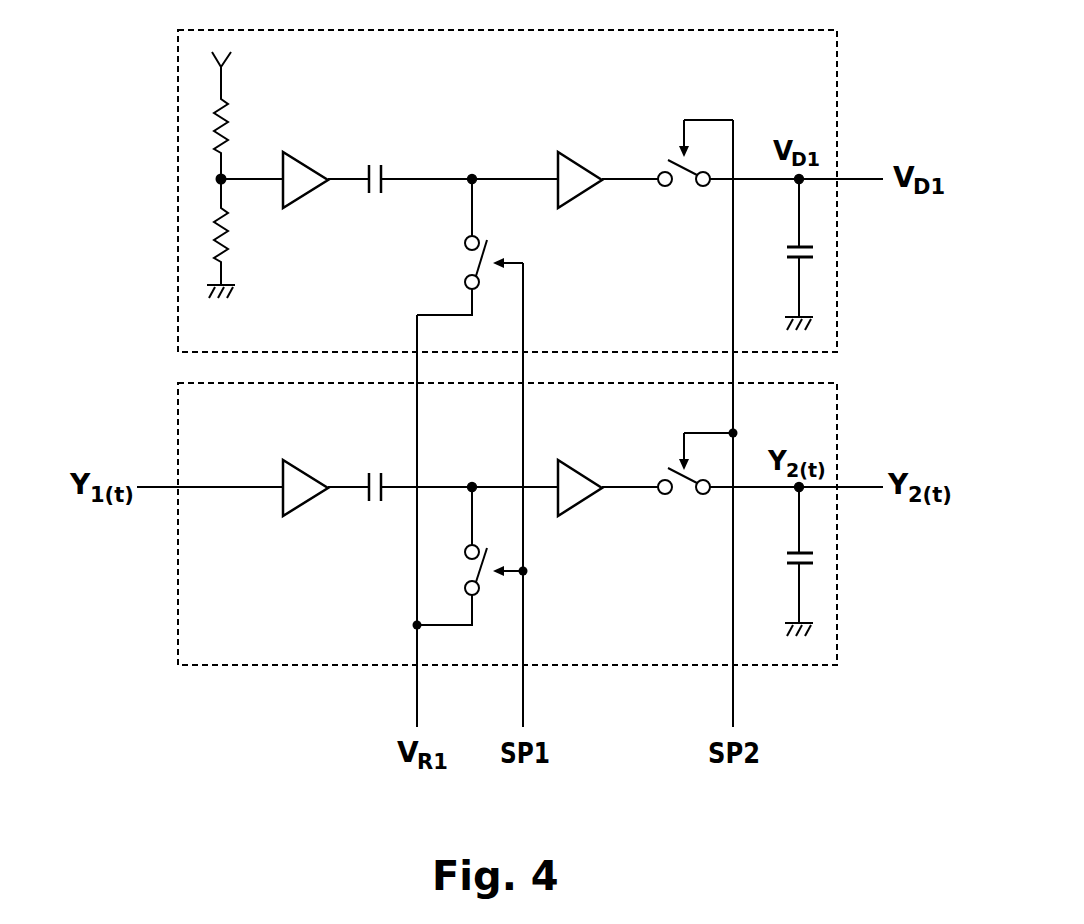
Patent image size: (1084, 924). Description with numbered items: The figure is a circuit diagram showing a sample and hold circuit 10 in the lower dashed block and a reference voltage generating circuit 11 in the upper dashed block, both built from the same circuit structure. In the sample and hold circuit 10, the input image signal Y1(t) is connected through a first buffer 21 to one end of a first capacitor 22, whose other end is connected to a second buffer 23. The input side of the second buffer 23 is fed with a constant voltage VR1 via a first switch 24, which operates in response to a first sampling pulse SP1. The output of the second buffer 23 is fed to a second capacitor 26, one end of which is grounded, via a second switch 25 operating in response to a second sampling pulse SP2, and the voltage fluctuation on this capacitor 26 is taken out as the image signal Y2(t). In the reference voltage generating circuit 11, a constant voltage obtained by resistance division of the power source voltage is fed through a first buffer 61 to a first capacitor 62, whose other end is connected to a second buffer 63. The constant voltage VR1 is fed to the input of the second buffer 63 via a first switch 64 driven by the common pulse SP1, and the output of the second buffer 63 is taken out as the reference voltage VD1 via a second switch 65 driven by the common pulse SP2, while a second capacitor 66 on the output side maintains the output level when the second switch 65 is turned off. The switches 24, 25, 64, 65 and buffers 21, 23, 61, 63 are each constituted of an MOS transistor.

The sample and hold circuit 10 is at (160, 618).
The reference voltage generating circuit 11 is at (160, 258).
The first buffer 21 is at (298, 480).
The first capacitor 22 is at (366, 505).
The second buffer 23 is at (575, 495).
The first switch 24 is at (451, 570).
The second switch 25 is at (672, 500).
The second capacitor 26 is at (782, 573).
The first buffer 61 is at (298, 170).
The first capacitor 62 is at (374, 160).
The second buffer 63 is at (574, 170).
The first switch 64 is at (457, 263).
The second switch 65 is at (678, 193).
The second capacitor 66 is at (782, 263).